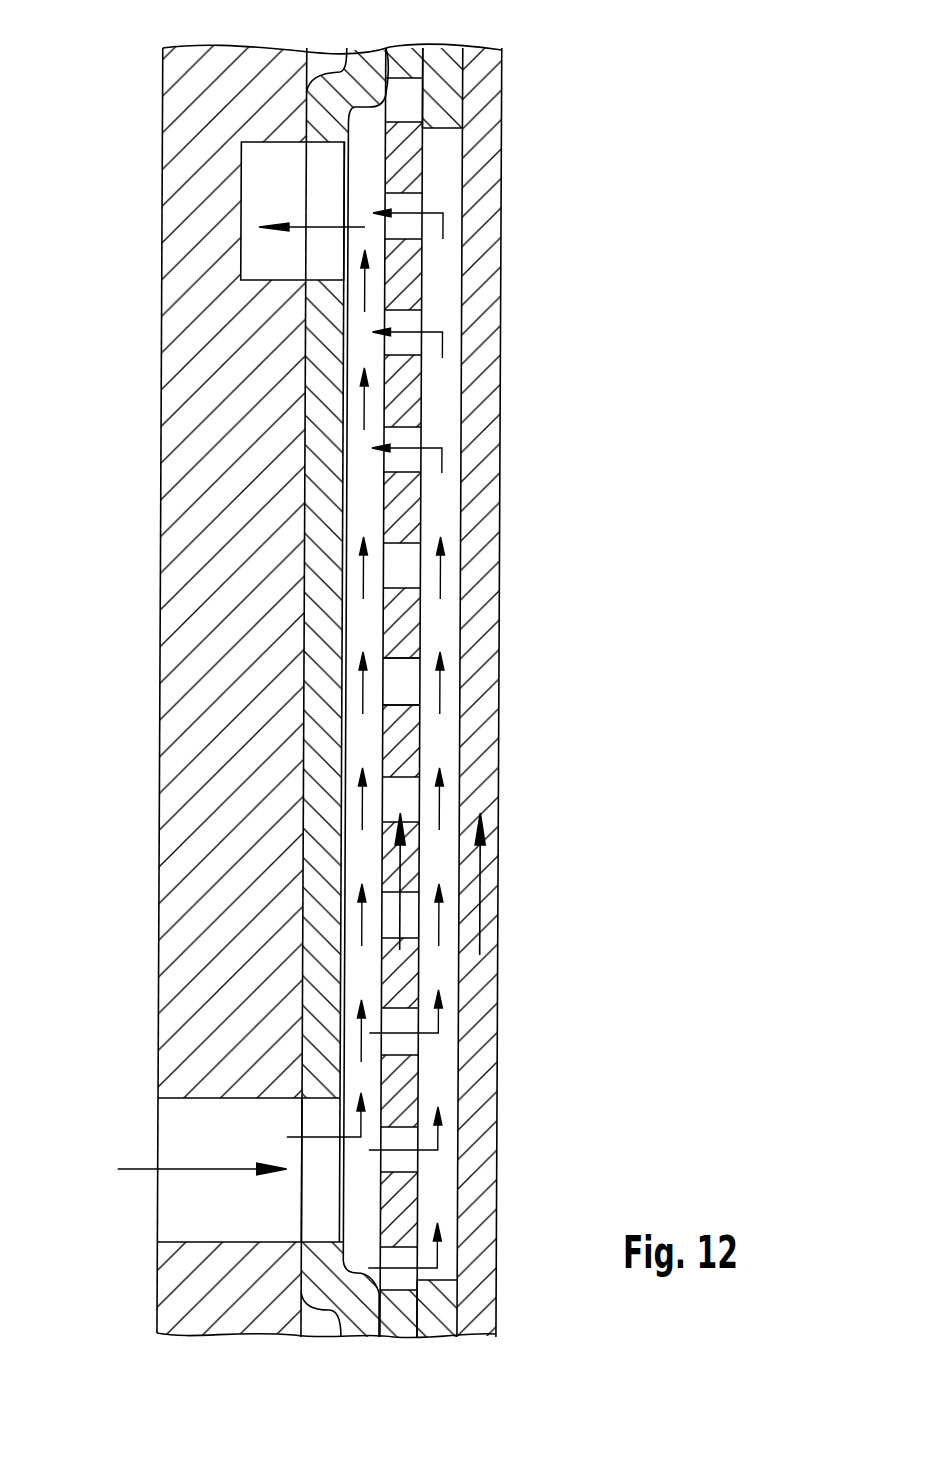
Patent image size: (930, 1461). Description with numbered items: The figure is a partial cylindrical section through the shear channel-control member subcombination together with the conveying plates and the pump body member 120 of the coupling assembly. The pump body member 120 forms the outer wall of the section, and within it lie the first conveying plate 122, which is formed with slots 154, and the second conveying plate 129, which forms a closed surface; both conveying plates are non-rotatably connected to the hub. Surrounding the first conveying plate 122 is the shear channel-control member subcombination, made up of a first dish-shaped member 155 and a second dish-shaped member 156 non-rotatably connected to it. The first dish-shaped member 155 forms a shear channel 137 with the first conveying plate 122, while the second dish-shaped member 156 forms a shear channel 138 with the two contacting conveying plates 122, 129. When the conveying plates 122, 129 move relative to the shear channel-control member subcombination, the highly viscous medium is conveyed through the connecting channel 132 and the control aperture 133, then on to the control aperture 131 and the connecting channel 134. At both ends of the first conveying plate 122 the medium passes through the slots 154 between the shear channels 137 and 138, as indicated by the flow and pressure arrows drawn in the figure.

The pump body member 120 is at (198, 802).
The first conveying plate 122 is at (405, 160).
The second conveying plate 129 is at (478, 218).
The control aperture 131 is at (320, 173).
The connecting channel 132 is at (187, 1215).
The control aperture 133 is at (313, 1120).
The connecting channel 134 is at (253, 212).
The shear channel 137 is at (355, 1078).
The shear channel 138 is at (442, 1087).
The slots 154 is at (403, 682).
The first dish-shaped member 155 is at (354, 74).
The second dish-shaped member 156 is at (440, 87).